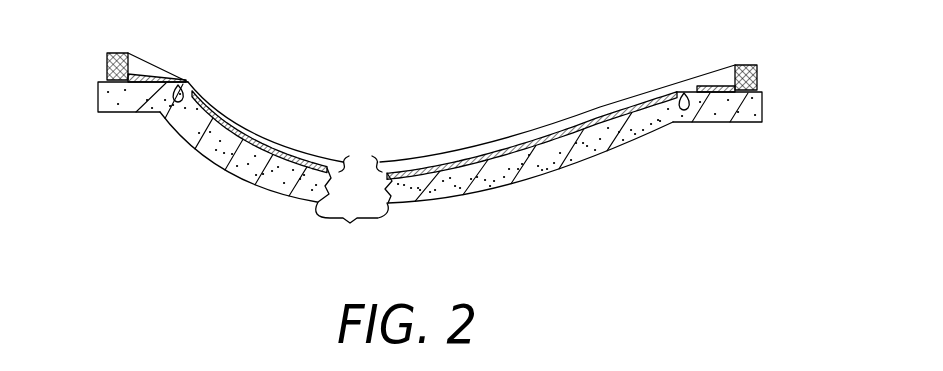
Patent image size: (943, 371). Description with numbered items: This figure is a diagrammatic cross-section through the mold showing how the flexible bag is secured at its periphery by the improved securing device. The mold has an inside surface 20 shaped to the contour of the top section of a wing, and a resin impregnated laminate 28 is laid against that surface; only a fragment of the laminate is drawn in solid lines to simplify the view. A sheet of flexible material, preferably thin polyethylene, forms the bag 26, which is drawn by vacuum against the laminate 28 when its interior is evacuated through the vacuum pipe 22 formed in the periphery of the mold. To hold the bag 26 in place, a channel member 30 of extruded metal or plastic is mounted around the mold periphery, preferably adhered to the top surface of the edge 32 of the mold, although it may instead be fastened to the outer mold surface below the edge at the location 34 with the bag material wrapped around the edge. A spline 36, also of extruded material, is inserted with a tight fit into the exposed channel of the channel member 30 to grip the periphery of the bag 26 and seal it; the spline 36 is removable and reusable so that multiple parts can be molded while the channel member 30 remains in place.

The inside surface 20 is at (277, 157).
The vacuum pipe 22 is at (153, 108).
The bag 26 is at (98, 66).
The resin impregnated laminate 28 is at (473, 160).
The channel member 30 is at (107, 68).
The edge of the mold 32 is at (100, 108).
The location 34 is at (162, 133).
The spline 36 is at (128, 53).